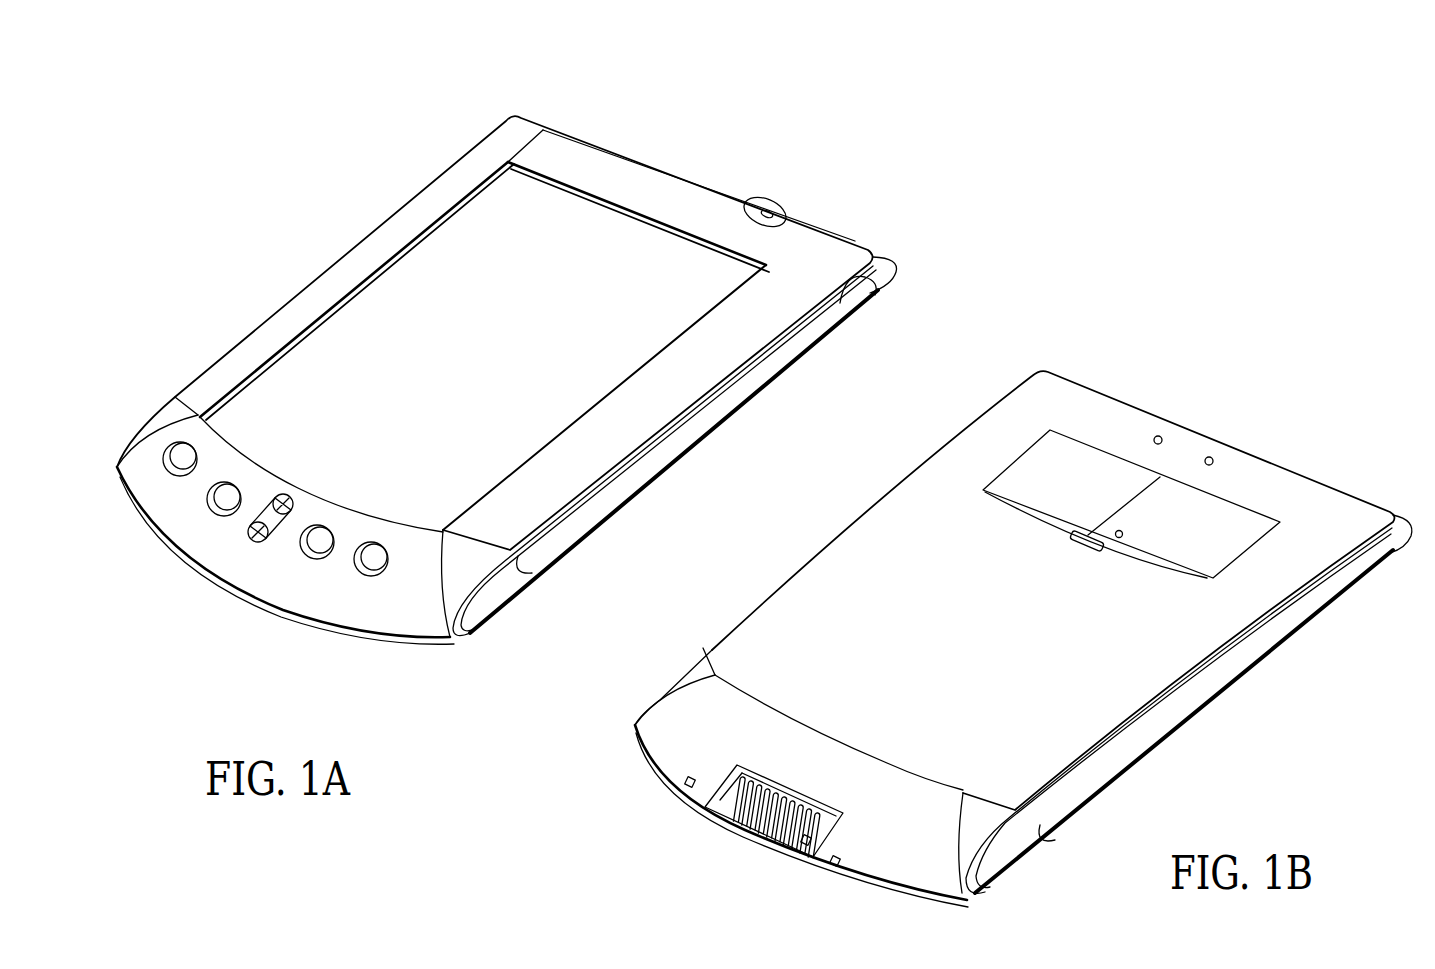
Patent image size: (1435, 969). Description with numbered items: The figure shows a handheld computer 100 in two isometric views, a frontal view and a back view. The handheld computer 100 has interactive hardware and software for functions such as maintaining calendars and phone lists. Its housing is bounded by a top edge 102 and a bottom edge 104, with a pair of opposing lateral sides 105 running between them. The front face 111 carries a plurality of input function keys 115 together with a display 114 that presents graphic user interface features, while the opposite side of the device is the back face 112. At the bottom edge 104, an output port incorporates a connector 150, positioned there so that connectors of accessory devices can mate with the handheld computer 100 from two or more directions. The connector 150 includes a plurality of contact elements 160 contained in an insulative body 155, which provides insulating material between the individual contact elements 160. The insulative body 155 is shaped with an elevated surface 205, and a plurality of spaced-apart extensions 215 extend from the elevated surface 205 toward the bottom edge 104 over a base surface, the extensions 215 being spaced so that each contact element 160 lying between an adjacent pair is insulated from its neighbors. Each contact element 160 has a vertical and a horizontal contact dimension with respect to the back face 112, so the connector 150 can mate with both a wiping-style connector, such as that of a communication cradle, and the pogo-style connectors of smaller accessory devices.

In FIG. 1A, the handheld computer 100 is at (767, 110).
In FIG. 1B, the handheld computer 100 is at (1222, 335).
In FIG. 1A, the top edge 102 is at (688, 183).
In FIG. 1A, the bottom edge 104 is at (283, 610).
In FIG. 1B, the bottom edge 104 is at (867, 887).
In FIG. 1A, the lateral sides 105 is at (413, 196).
In FIG. 1A, the front face 111 is at (630, 182).
In FIG. 1B, the back face 112 is at (1100, 412).
In FIG. 1A, the display 114 is at (673, 243).
In FIG. 1A, the input function keys 115 is at (207, 507).
In FIG. 1B, the connector 150 is at (718, 854).
In FIG. 1B, the insulative body 155 is at (738, 765).
In FIG. 1B, the contact elements 160 is at (813, 843).
In FIG. 1B, the elevated surface 205 is at (810, 797).
In FIG. 1B, the extensions 215 is at (757, 843).